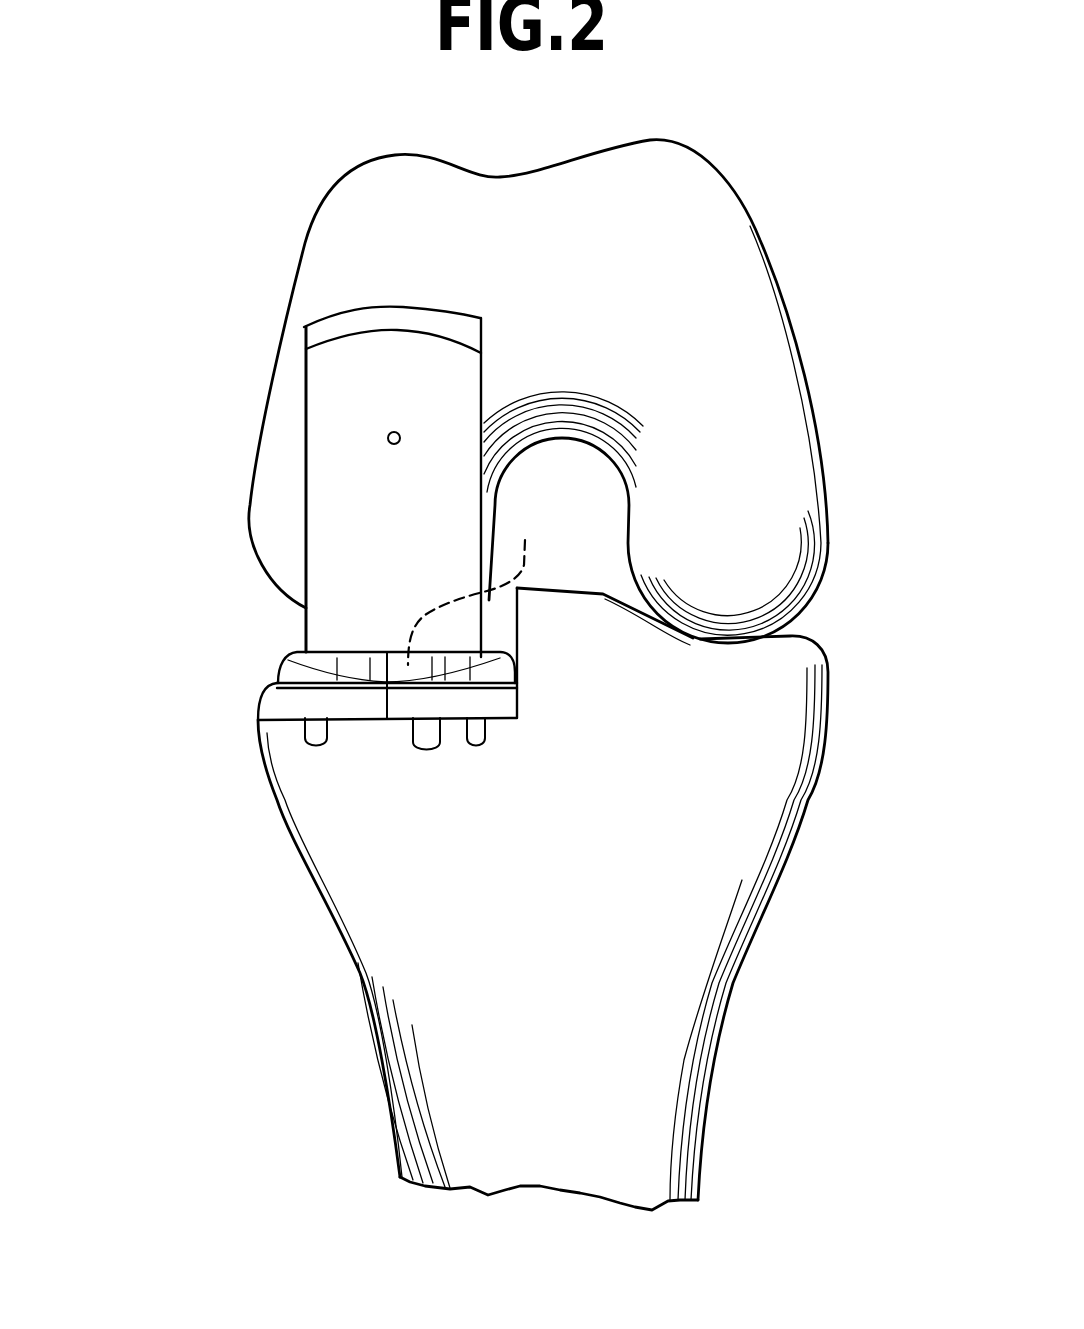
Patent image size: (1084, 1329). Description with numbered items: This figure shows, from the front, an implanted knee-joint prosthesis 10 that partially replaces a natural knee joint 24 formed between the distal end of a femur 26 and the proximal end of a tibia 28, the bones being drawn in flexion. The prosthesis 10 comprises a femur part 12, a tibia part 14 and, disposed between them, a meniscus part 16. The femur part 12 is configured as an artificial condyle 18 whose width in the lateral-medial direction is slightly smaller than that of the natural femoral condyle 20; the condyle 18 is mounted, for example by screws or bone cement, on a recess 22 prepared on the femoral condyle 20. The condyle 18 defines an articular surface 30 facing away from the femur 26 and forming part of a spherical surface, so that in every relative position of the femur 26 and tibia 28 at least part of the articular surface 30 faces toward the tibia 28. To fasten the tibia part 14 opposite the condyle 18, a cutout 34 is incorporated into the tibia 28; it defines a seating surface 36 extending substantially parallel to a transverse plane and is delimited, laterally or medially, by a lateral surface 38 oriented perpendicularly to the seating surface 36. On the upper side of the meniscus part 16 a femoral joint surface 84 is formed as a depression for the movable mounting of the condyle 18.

The knee-joint prosthesis 10 is at (217, 597).
The femur part 12 is at (359, 461).
The tibia part 14 is at (421, 716).
The meniscus part 16 is at (280, 655).
The artificial condyle 18 is at (337, 415).
The natural femoral condyle 20 is at (277, 480).
The recess 22 is at (373, 317).
The natural knee joint 24 is at (835, 604).
The femur 26 is at (678, 141).
The tibia 28 is at (687, 1090).
The articular surface 30 is at (367, 553).
The cutout 34 is at (372, 718).
The seating surface 36 is at (415, 715).
The lateral surface 38 is at (515, 628).
The femoral joint surface 84 is at (475, 581).